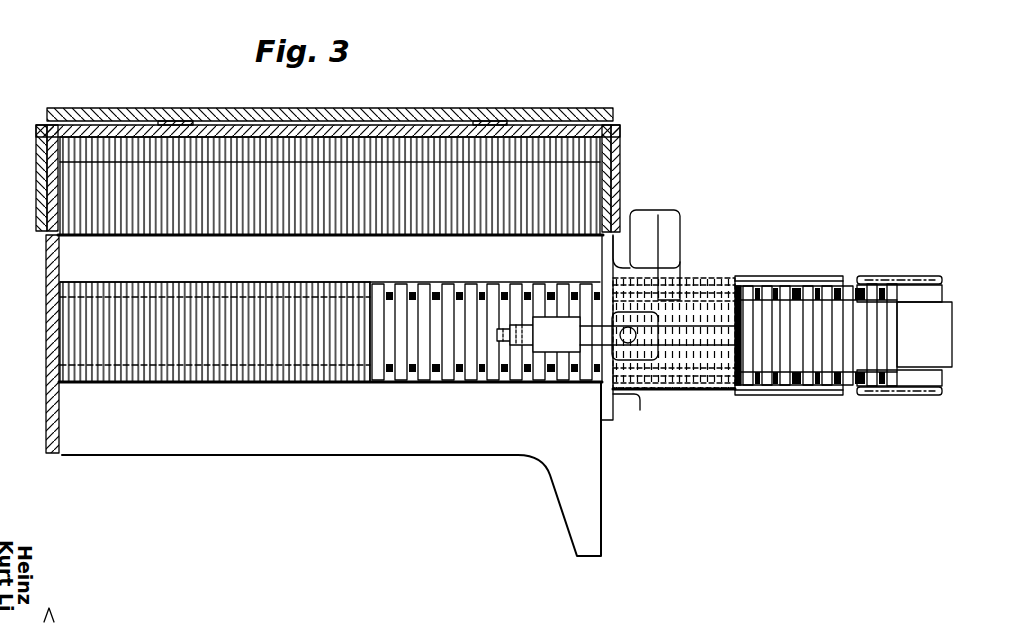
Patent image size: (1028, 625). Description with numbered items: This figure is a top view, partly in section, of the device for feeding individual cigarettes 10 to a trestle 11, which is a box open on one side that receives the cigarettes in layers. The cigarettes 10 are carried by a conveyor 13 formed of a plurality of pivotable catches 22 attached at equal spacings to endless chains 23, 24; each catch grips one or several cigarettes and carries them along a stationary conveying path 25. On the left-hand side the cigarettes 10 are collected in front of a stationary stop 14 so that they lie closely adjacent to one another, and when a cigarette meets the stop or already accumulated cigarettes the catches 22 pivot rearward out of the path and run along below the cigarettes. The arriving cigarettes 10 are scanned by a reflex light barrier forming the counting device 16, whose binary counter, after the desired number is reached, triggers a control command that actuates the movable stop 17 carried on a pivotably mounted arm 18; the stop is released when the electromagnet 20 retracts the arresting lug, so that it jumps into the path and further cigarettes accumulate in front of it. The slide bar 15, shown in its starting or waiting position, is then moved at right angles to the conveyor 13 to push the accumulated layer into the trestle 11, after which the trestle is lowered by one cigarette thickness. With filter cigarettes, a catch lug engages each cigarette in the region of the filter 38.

The cigarettes 10 is at (233, 218).
The trestle 11 is at (50, 189).
The conveyor 13 is at (953, 284).
The stationary stop 14 is at (54, 316).
The slide bar 15 is at (407, 445).
The counting device 16 is at (630, 337).
The movable stop 17 is at (616, 396).
The pivotably mounted arm 18 is at (618, 310).
The electromagnet 20 is at (546, 365).
The pivotable catches 22 is at (838, 285).
The endless chain 23 is at (926, 276).
The endless chain 24 is at (925, 395).
The stationary conveying path 25 is at (948, 335).
The filter 38 is at (447, 155).